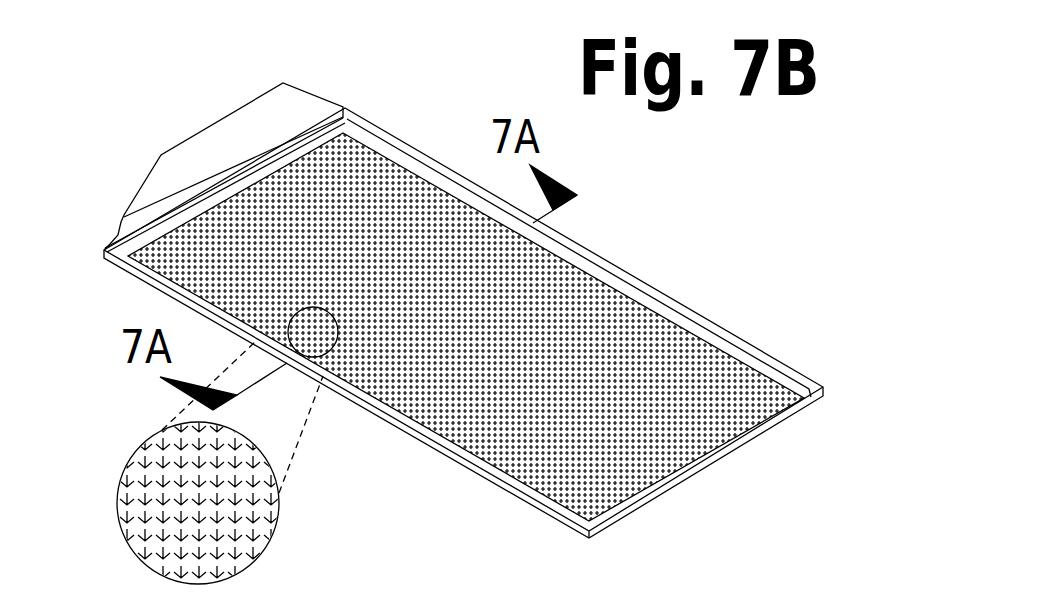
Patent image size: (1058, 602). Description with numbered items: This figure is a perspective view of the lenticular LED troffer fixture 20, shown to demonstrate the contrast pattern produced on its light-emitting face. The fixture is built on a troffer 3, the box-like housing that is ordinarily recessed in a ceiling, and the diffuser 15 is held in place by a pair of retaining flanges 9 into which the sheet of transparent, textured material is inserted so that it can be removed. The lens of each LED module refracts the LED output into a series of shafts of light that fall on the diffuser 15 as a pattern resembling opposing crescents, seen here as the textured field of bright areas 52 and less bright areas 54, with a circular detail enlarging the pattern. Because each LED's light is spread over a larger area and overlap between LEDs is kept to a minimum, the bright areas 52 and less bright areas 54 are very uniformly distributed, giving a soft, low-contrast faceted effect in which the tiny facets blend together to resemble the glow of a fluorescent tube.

The troffer 3 is at (275, 108).
The retaining flanges 9 is at (715, 338).
The diffuser 15 is at (650, 322).
The lenticular LED troffer fixture 20 is at (637, 210).
The bright areas 52 is at (473, 343).
The less bright areas 54 is at (217, 583).